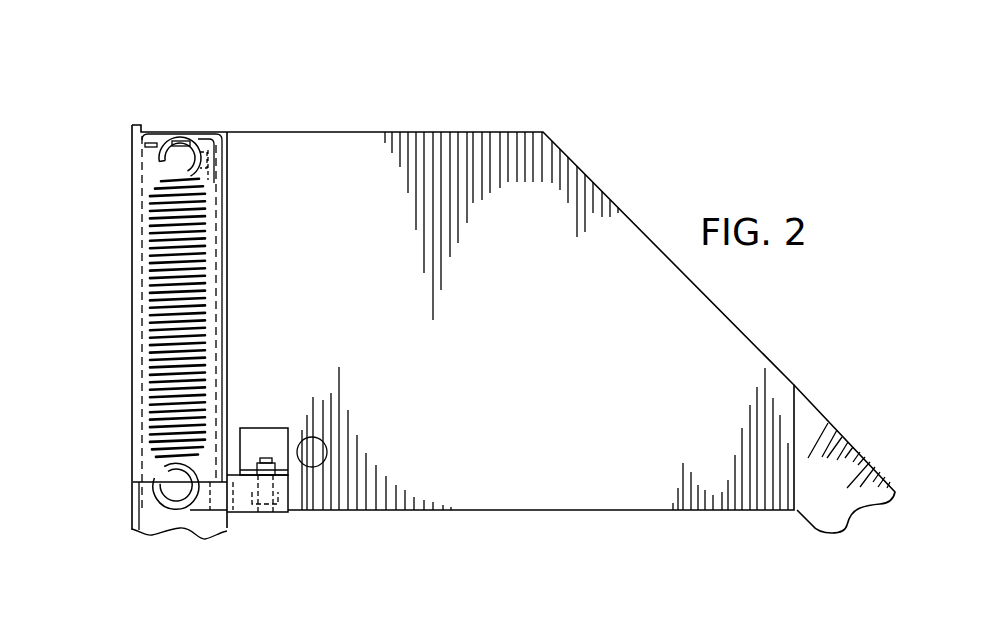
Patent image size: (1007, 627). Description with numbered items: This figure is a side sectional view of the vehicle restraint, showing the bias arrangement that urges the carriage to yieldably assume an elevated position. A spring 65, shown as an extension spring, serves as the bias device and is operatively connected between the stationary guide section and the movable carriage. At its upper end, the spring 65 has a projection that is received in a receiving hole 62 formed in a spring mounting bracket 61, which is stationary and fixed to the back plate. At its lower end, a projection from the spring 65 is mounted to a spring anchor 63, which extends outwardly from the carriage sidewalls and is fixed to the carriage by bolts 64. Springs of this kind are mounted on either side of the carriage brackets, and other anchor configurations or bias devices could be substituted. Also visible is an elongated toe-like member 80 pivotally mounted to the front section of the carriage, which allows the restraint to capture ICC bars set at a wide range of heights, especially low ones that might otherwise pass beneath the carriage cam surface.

The spring mounting bracket 61 is at (152, 142).
The receiving hole 62 is at (177, 140).
The spring anchor 63 is at (243, 514).
The bolts 64 is at (273, 514).
The spring 65 is at (185, 203).
The toe-like member 80 is at (843, 512).